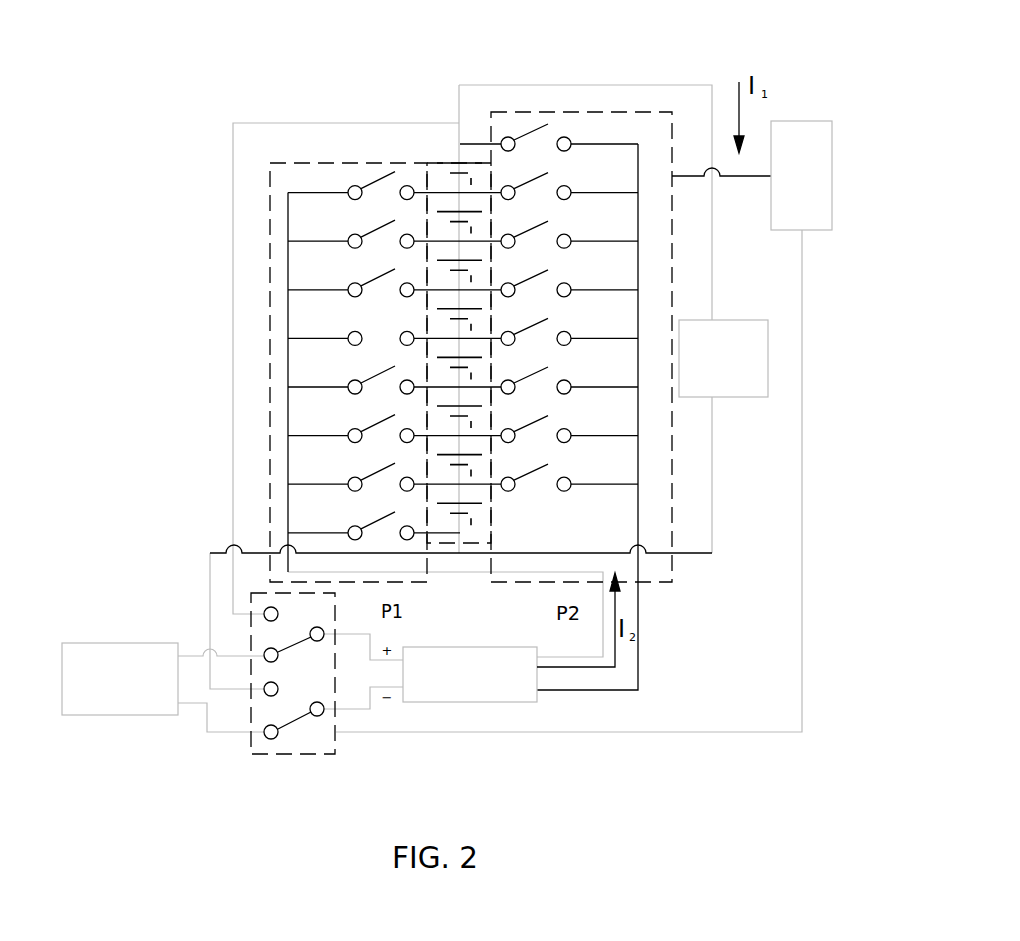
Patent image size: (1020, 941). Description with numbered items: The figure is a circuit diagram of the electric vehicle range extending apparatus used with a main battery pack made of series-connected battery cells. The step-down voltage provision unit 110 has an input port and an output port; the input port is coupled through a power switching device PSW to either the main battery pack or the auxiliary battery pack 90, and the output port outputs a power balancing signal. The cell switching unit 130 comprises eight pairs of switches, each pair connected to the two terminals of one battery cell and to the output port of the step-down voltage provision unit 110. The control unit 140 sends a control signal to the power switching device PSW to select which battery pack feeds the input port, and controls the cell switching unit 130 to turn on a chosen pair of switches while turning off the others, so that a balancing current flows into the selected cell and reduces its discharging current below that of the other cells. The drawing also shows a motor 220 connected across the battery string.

The auxiliary battery pack 90 is at (107, 643).
The step-down voltage provision unit 110 is at (482, 702).
The cell switching unit 130 is at (675, 571).
The control unit 140 is at (803, 121).
The motor 220 is at (743, 397).
The power switching device PSW is at (337, 748).